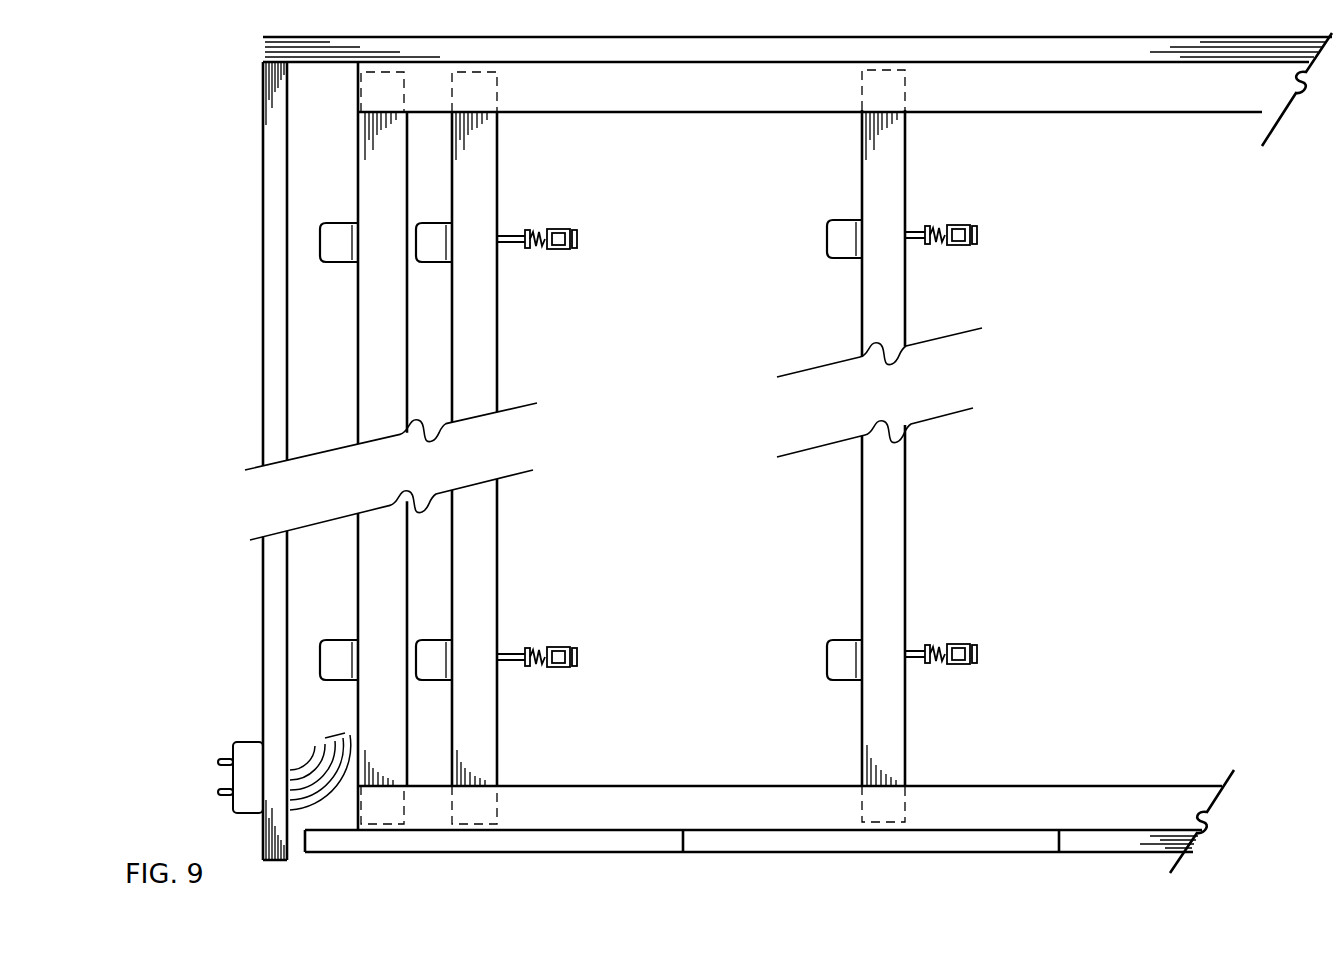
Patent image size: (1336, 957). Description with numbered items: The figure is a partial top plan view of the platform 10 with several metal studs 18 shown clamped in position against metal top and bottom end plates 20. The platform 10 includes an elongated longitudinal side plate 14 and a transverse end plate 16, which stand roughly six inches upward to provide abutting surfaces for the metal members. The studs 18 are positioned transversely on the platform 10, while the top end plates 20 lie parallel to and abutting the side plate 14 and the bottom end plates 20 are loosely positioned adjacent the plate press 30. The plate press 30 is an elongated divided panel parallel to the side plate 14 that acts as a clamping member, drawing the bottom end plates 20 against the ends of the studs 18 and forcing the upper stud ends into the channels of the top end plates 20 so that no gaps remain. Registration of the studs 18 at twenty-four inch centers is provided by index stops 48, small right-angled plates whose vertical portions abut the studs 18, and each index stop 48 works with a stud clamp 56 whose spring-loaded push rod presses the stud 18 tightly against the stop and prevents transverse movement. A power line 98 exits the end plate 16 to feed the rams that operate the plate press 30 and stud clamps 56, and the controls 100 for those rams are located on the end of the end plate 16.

The platform 10 is at (743, 97).
The side plate 14 is at (592, 50).
The end plate 16 is at (275, 255).
The metal stud 18 is at (375, 547).
The metal top and bottom end plate 20 is at (730, 88).
The plate press 30 is at (793, 836).
The index stop 48 is at (832, 240).
The stud clamp 56 is at (578, 240).
The power line 98 is at (315, 790).
The controls 100 is at (245, 755).